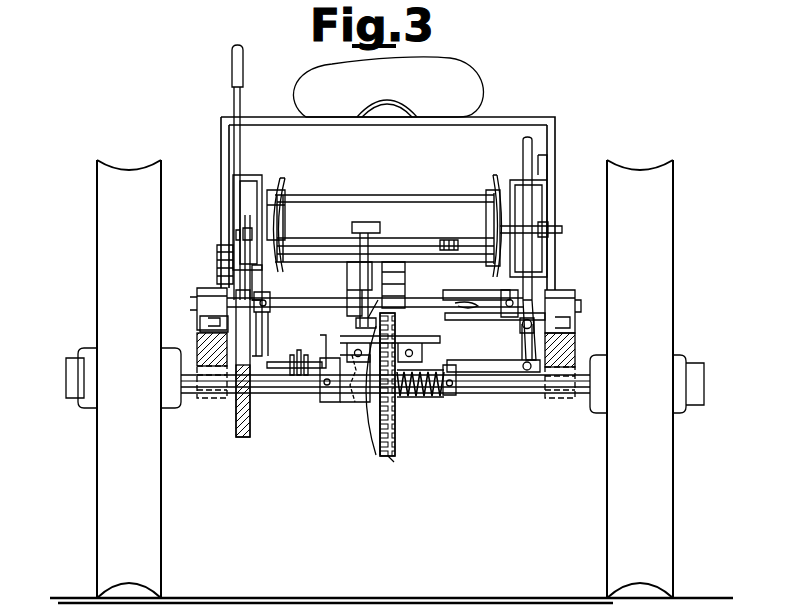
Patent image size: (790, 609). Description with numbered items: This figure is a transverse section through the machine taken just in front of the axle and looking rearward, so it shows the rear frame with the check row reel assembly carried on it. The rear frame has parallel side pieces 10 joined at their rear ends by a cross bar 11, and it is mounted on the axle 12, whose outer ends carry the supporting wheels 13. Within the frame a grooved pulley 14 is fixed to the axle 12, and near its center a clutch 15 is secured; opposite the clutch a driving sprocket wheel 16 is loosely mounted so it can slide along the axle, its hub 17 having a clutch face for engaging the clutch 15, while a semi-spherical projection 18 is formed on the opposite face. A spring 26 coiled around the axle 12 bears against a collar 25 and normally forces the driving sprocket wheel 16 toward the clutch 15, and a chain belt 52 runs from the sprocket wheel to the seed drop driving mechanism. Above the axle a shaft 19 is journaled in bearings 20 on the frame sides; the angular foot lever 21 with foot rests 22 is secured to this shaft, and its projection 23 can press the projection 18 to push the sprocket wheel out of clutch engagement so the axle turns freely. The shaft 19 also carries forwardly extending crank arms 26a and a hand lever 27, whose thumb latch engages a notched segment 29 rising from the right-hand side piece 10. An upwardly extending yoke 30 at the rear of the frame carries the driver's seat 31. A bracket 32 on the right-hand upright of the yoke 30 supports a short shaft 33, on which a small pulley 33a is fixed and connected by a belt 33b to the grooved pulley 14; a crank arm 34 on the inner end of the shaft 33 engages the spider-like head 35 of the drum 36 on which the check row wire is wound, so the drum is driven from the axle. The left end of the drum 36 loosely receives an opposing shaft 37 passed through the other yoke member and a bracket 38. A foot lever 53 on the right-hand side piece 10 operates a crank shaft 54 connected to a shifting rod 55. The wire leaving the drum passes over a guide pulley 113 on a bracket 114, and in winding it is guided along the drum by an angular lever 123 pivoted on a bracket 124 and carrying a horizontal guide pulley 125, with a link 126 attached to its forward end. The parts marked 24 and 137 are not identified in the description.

The side pieces 10 is at (196, 347).
The cross bar 11 is at (302, 334).
The axle 12 is at (502, 396).
The supporting wheels 13 is at (385, 379).
The grooved pulley 14 is at (236, 430).
The clutch 15 is at (325, 404).
The driving sprocket wheel 16 is at (395, 433).
The hub 17 is at (356, 403).
The semi-spherical projection 18 is at (372, 415).
The shaft 19 is at (531, 298).
The bearings 20 is at (211, 297).
The angular foot lever 21 is at (350, 287).
The foot rests 22 is at (371, 221).
The projection 23 is at (360, 328).
The link block 24 is at (288, 324).
The collar 25 is at (456, 355).
The spring 26 is at (430, 397).
The crank arm 26a is at (262, 330).
The lever 27 is at (249, 172).
The notched segment 29 is at (216, 259).
The yoke 30 is at (441, 125).
The driver's seat 31 is at (388, 87).
The bracket 32 is at (253, 176).
The short shaft 33 is at (248, 249).
The small pulley 33a is at (235, 229).
The belt 33b is at (262, 284).
The crank arm 34 is at (290, 196).
The spider-like head 35 is at (279, 180).
The drum 36 is at (387, 228).
The opposing shaft 37 is at (563, 230).
The bracket 38 is at (520, 190).
The chain belt 52 is at (394, 456).
The foot lever 53 is at (199, 321).
The crank shaft 54 is at (271, 372).
The shifting or connecting rod 55 is at (283, 366).
The guide pulley 113 is at (480, 295).
The bracket 114 is at (568, 308).
The angular lever 123 is at (407, 291).
The bracket 124 is at (418, 349).
The horizontal guide pulley 125 is at (445, 247).
The link 126 is at (515, 367).
The pivot block 137 is at (503, 300).